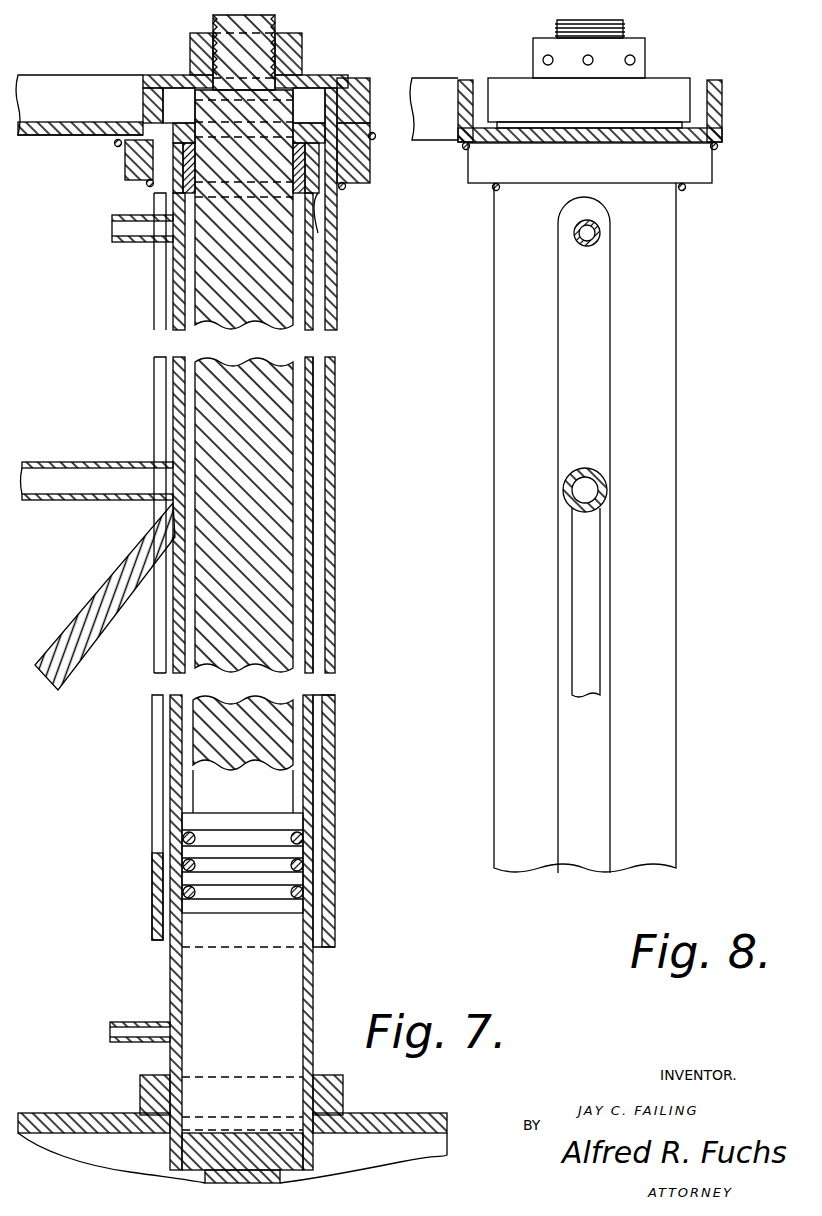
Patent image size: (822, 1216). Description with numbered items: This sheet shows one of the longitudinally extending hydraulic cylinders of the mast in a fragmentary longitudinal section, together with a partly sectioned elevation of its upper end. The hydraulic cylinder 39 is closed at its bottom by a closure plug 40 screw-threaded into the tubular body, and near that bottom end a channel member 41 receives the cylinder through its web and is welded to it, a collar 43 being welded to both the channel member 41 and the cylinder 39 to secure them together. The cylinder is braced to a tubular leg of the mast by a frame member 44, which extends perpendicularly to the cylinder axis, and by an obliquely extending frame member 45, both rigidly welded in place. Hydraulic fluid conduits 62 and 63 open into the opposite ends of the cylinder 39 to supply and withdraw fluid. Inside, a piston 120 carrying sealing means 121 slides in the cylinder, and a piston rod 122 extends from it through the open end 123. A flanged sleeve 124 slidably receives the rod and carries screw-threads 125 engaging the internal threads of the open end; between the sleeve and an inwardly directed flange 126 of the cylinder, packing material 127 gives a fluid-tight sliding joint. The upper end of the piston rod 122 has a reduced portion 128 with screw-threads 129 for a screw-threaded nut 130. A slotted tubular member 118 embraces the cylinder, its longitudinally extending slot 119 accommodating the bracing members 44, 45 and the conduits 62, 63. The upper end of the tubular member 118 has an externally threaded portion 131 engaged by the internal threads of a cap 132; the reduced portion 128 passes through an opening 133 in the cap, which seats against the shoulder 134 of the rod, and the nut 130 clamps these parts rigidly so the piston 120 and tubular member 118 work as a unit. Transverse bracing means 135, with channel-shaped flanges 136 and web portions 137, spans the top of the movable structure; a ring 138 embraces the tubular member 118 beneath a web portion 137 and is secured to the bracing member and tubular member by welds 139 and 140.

In FIG. 7, the hydraulic cylinder 39 is at (313, 565).
In FIG. 7, the closure plug 40 is at (240, 1140).
In FIG. 7, the channel member 41 is at (400, 1120).
In FIG. 7, the collar 43 is at (343, 1097).
In FIG. 7, the frame member 44 is at (78, 500).
In FIG. 8, the frame member 44 is at (570, 507).
In FIG. 7, the obliquely extending frame member 45 is at (122, 600).
In FIG. 8, the obliquely extending frame member 45 is at (592, 572).
In FIG. 7, the hydraulic fluid conduit 62 is at (135, 1040).
In FIG. 7, the hydraulic fluid conduit 63 is at (125, 243).
In FIG. 8, the hydraulic fluid conduit 63 is at (600, 230).
In FIG. 7, the tubular member 118 is at (338, 300).
In FIG. 8, the tubular member 118 is at (665, 475).
In FIG. 7, the longitudinally extending slot 119 is at (157, 283).
In FIG. 8, the longitudinally extending slot 119 is at (612, 440).
In FIG. 7, the piston 120 is at (260, 830).
In FIG. 7, the sealing means 121 is at (303, 865).
In FIG. 7, the piston rod 122 is at (285, 610).
In FIG. 7, the open end 123 is at (165, 145).
In FIG. 7, the flanged sleeve 124 is at (320, 145).
In FIG. 7, the screw-threads 125 is at (320, 160).
In FIG. 7, the inwardly directed flange 126 is at (313, 230).
In FIG. 7, the packing material 127 is at (318, 200).
In FIG. 7, the reduced portion 128 is at (263, 24).
In FIG. 7, the screw-threads 129 is at (213, 24).
In FIG. 8, the screw-threads 129 is at (555, 28).
In FIG. 7, the screw-threaded nut 130 is at (300, 57).
In FIG. 8, the screw-threaded nut 130 is at (636, 50).
In FIG. 7, the externally threaded portion 131 is at (311, 105).
In FIG. 7, the cap 132 is at (352, 95).
In FIG. 7, the opening 133 is at (185, 80).
In FIG. 7, the shoulder 134 is at (181, 105).
In FIG. 7, the transverse bracing means 135 is at (45, 80).
In FIG. 8, the transverse bracing means 135 is at (430, 85).
In FIG. 8, the flange 136 is at (465, 100).
In FIG. 8, the web portion 137 is at (616, 142).
In FIG. 7, the ring 138 is at (130, 165).
In FIG. 8, the ring 138 is at (707, 168).
In FIG. 7, the weld 139 is at (118, 146).
In FIG. 8, the weld 139 is at (464, 149).
In FIG. 7, the weld 140 is at (148, 186).
In FIG. 8, the weld 140 is at (495, 190).